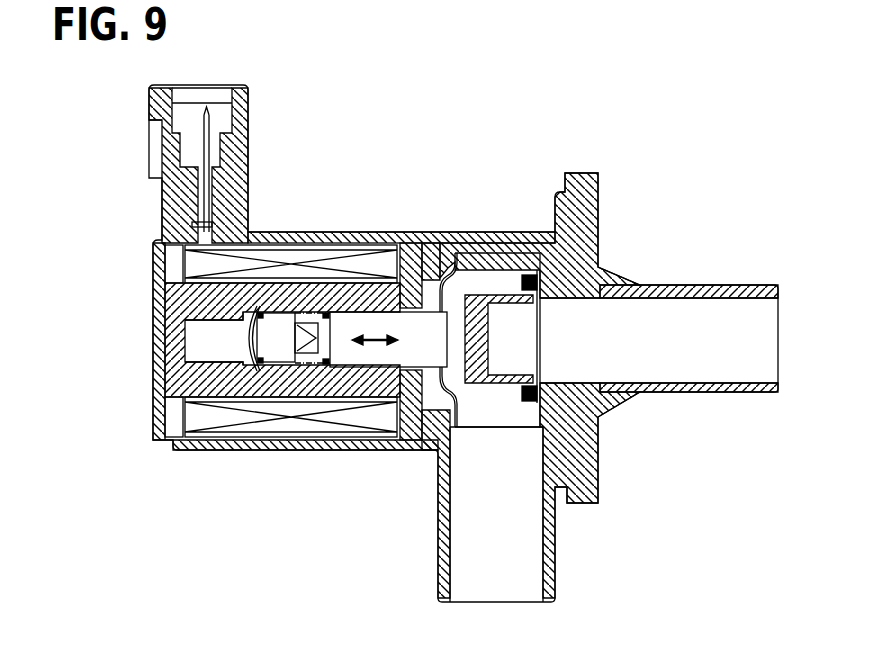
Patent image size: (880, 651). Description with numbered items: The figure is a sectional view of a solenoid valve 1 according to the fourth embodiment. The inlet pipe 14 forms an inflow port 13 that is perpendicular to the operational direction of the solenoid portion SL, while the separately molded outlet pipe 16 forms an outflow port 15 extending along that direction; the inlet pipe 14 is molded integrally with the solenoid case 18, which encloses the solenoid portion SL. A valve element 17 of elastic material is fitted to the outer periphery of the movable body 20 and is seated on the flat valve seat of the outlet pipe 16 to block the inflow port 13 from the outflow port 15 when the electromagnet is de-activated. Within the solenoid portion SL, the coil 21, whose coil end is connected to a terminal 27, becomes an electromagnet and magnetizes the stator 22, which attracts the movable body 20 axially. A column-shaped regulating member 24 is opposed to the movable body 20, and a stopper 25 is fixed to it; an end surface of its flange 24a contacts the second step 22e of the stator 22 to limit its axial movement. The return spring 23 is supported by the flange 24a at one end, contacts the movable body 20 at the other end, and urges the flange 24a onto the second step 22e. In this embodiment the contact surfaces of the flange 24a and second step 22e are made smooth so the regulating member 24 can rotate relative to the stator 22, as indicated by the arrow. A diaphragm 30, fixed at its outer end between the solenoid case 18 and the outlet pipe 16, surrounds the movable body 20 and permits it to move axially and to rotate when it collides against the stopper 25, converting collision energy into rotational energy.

The solenoid valve 1 is at (461, 117).
The terminal 27 is at (205, 142).
The solenoid portion SL is at (356, 219).
The solenoid case 18 is at (382, 236).
The coil 21 is at (293, 255).
The stator 22 is at (205, 375).
The second step 22e is at (252, 318).
The regulating member 24 is at (280, 330).
The flange 24a is at (250, 372).
The stopper 25 is at (310, 330).
The return spring 23 is at (314, 370).
The movable body 20 is at (383, 357).
The diaphragm 30 is at (442, 270).
The outlet pipe 16 is at (742, 287).
The valve element 17 is at (530, 276).
The outflow port 15 is at (710, 351).
The inlet pipe 14 is at (553, 565).
The inflow port 13 is at (511, 561).